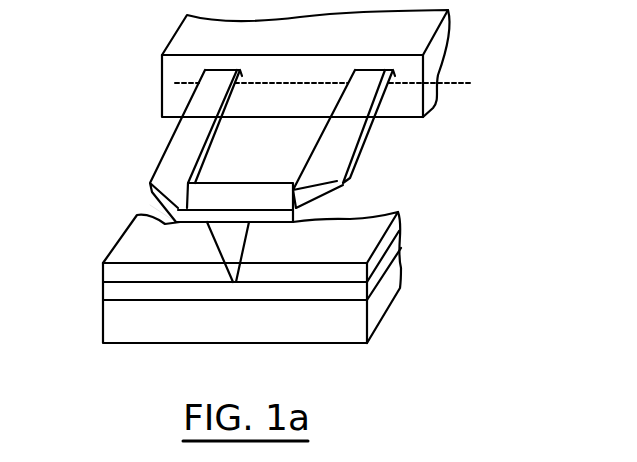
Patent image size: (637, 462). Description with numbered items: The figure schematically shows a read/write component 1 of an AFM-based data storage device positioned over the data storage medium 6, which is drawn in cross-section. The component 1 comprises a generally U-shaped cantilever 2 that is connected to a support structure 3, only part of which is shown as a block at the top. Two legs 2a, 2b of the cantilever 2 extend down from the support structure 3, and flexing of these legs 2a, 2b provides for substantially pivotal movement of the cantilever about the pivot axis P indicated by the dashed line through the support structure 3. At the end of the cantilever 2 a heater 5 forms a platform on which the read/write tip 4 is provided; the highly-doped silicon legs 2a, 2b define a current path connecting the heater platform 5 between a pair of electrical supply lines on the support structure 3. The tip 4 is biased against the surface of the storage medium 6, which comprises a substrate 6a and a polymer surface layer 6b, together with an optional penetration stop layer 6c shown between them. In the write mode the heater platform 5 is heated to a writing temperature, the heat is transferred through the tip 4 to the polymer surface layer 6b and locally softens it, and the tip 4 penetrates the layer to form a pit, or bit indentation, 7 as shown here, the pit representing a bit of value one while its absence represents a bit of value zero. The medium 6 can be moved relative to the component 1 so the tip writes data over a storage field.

The read/write component 1 is at (470, 152).
The cantilever 2 is at (274, 146).
The cantilever leg 2a is at (220, 141).
The cantilever leg 2b is at (365, 143).
The support structure 3 is at (162, 73).
The read/write tip 4 is at (238, 242).
The heater 5 is at (160, 218).
The data storage medium 6 is at (253, 277).
The substrate 6a is at (103, 318).
The polymer surface layer 6b is at (103, 279).
The penetration stop layer 6c is at (345, 289).
The pit 7 is at (233, 282).
The pivot axis P is at (336, 83).